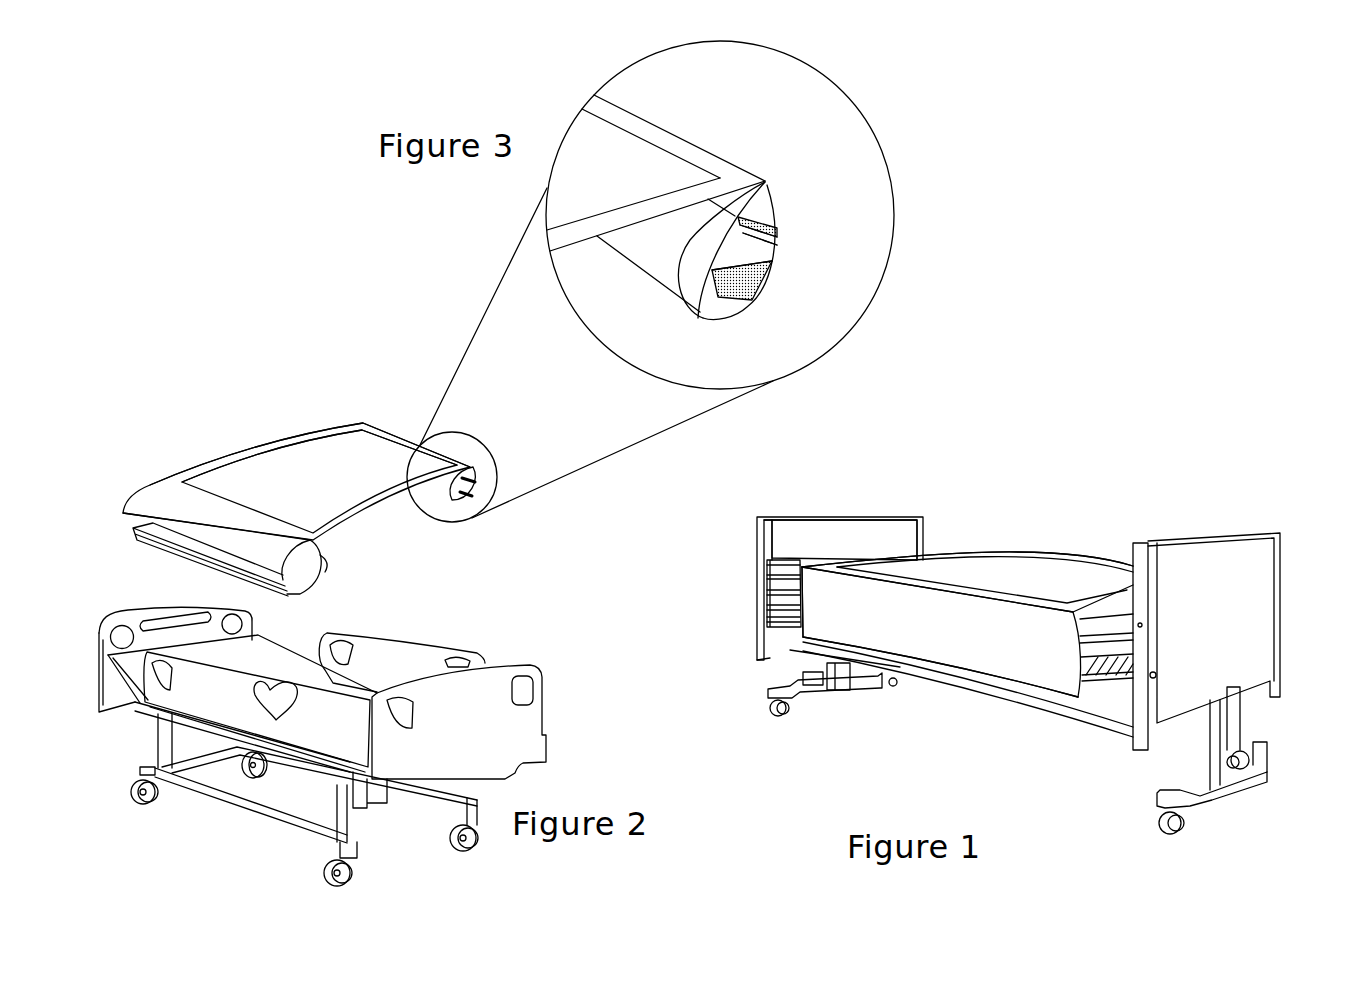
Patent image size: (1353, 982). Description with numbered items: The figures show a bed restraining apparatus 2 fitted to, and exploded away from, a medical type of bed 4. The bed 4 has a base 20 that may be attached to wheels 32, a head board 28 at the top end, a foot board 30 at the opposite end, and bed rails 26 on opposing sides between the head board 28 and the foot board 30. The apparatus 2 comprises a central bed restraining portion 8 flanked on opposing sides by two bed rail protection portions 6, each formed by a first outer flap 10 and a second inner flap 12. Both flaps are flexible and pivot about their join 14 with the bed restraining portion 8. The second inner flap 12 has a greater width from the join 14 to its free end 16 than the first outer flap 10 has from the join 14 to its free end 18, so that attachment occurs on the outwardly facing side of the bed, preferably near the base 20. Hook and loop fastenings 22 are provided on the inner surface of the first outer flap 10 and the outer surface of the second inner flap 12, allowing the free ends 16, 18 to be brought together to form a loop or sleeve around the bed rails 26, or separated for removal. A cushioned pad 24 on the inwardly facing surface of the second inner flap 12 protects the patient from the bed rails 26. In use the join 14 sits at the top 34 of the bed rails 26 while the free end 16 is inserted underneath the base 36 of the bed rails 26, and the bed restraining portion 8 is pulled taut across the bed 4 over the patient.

In FIG. 3, the bed restraining apparatus 2 is at (261, 433).
In FIG. 1, the bed restraining apparatus 2 is at (1027, 576).
In FIG. 1, the bed 4 is at (1018, 656).
In FIG. 3, the bed rail protection portion 6 is at (384, 424).
In FIG. 1, the bed rail protection portion 6 is at (820, 618).
In FIG. 3, the bed restraining portion 8 is at (323, 445).
In FIG. 1, the bed restraining portion 8 is at (955, 573).
In FIG. 3, the first outer flap 10 is at (155, 497).
In FIG. 1, the first outer flap 10 is at (812, 583).
In FIG. 3, the second inner flap 12 is at (703, 320).
In FIG. 3, the join 14 is at (769, 176).
In FIG. 3, the free end 16 is at (780, 270).
In FIG. 3, the free end 18 is at (764, 245).
In FIG. 1, the base 20 is at (1072, 720).
In FIG. 3, the hook and loop fastenings 22 is at (778, 231).
In FIG. 3, the cushioned pad 24 is at (663, 263).
In FIG. 3, the bed rails 26 is at (750, 280).
In FIG. 1, the bed rails 26 is at (1120, 655).
In FIG. 1, the head board 28 is at (847, 540).
In FIG. 1, the foot board 30 is at (1240, 594).
In FIG. 2, the wheels 32 is at (146, 812).
In FIG. 1, the wheels 32 is at (805, 710).
In FIG. 1, the top 34 is at (790, 551).
In FIG. 1, the base 36 is at (765, 630).